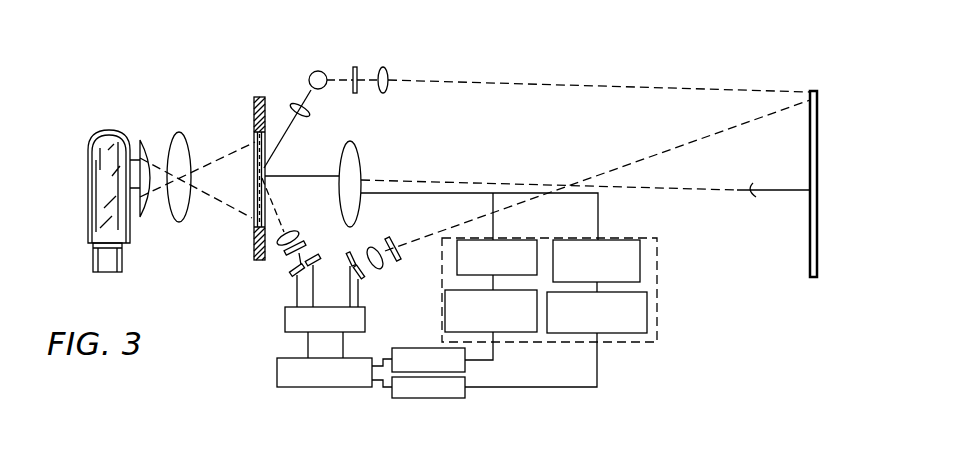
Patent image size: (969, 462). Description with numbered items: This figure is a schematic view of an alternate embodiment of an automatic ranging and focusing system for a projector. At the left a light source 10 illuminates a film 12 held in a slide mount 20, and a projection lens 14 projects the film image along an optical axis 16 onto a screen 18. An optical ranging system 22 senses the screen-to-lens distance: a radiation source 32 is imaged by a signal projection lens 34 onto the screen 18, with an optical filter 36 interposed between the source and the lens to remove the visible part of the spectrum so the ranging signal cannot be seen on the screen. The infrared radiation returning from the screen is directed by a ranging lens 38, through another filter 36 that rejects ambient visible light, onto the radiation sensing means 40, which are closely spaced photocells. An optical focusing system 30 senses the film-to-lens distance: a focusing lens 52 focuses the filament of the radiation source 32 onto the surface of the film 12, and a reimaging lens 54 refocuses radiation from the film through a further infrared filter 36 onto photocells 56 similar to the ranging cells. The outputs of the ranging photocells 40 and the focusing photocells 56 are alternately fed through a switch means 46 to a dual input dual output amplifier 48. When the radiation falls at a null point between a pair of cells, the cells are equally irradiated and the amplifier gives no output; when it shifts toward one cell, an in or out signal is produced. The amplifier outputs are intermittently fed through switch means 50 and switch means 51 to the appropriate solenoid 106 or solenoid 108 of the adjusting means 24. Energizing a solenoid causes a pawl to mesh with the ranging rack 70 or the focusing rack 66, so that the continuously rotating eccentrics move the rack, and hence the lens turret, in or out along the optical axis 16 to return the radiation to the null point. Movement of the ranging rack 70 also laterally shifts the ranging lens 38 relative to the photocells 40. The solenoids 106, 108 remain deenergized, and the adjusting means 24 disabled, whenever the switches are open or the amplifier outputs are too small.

The light source 10 is at (88, 148).
The film 12 is at (257, 192).
The projection lens 14 is at (357, 160).
The optical axis 16 is at (752, 190).
The screen 18 is at (818, 112).
The slide mount 20 is at (254, 122).
The optical ranging system 22 is at (377, 272).
The adjusting means 24 is at (657, 292).
The optical focusing system 30 is at (285, 266).
The radiation source 32 is at (316, 70).
The signal projection lens 34 is at (388, 77).
The optical filter 36 is at (354, 67).
The ranging lens 38 is at (374, 250).
The radiation sensing means 40 is at (352, 256).
The switch means 46 is at (285, 322).
The amplifier 48 is at (277, 368).
The switch means 50 is at (400, 348).
The switch means 51 is at (462, 398).
The focusing lens 52 is at (297, 104).
The reimaging lens 54 is at (288, 232).
The photocells 56 is at (318, 258).
The focusing rack 66 is at (637, 252).
The ranging rack 70 is at (533, 250).
The solenoid 106 is at (445, 306).
The solenoid 108 is at (647, 316).